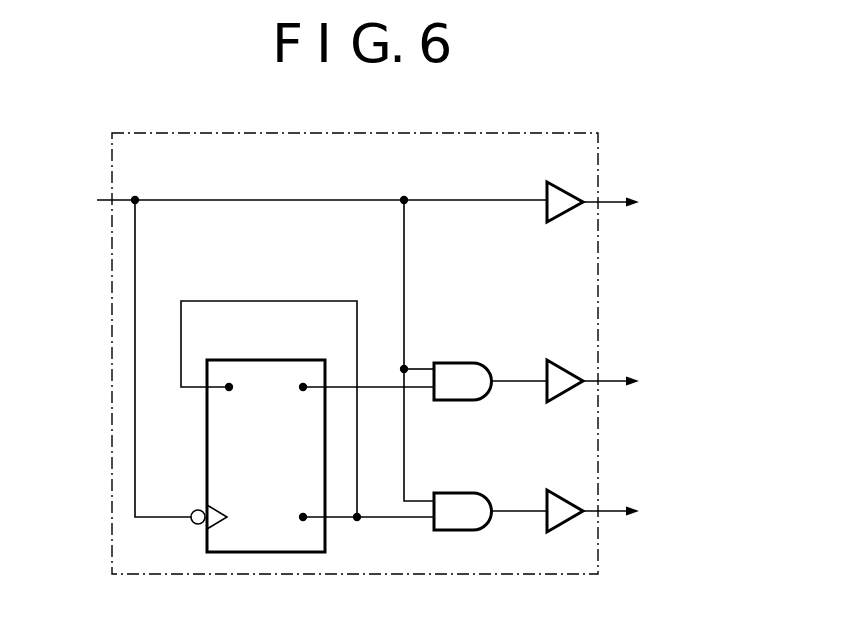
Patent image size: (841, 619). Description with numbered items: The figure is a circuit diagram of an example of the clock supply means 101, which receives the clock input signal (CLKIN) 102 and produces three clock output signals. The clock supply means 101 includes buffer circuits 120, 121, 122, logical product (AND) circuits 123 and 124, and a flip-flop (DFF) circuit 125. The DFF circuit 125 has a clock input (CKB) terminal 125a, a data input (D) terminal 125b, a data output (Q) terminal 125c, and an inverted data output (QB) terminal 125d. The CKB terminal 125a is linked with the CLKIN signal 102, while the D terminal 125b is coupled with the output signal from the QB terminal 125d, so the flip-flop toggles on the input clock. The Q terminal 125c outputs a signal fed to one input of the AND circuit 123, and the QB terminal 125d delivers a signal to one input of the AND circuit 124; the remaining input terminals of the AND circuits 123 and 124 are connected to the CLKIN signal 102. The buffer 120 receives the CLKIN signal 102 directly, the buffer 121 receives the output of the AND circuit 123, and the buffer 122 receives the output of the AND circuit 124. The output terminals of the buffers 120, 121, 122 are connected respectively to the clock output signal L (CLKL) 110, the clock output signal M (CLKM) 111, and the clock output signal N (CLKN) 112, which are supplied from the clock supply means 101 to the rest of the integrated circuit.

The clock supply means 101 is at (405, 133).
The clock input signal (CLKIN) 102 is at (101, 197).
The clock output signal L (CLKL) 110 is at (610, 205).
The clock output signal M (CLKM) 111 is at (612, 384).
The clock output signal N (CLKN) 112 is at (612, 514).
The buffer circuit 120 is at (568, 193).
The buffer circuit 121 is at (568, 372).
The buffer circuit 122 is at (573, 502).
The logical product (AND) circuit 123 is at (458, 363).
The logical product (AND) circuit 124 is at (460, 493).
The flip-flop (DFF) circuit 125 is at (207, 445).
The clock input (CKB) terminal 125a is at (213, 522).
The data input (D) terminal 125b is at (229, 387).
The data output (Q) terminal 125c is at (303, 387).
The inverted data output (QB) terminal 125d is at (305, 518).